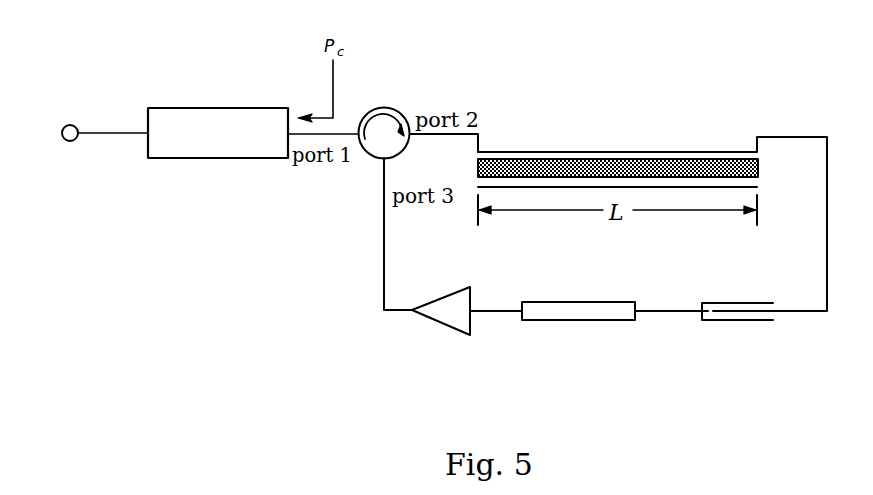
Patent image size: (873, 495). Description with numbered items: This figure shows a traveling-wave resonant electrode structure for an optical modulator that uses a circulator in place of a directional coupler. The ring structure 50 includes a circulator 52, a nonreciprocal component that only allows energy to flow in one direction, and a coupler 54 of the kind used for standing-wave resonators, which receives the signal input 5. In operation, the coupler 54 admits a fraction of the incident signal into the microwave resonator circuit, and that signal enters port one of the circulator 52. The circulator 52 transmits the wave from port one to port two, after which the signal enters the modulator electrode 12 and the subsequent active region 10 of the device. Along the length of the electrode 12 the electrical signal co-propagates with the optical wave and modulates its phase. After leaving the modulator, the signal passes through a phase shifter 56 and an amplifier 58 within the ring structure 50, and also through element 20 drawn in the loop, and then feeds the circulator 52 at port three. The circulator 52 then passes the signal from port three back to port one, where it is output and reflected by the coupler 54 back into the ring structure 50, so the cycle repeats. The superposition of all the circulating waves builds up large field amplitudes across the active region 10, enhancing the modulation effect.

The signal input 5 is at (55, 135).
The coupler 54 is at (182, 108).
The circulator 52 is at (405, 111).
The modulator electrode 12 is at (657, 152).
The active region 10 is at (759, 176).
The ring structure 50 is at (383, 291).
The amplifier 58 is at (457, 333).
The optical filter / delay element 20 is at (552, 320).
The phase shifter 56 is at (708, 322).